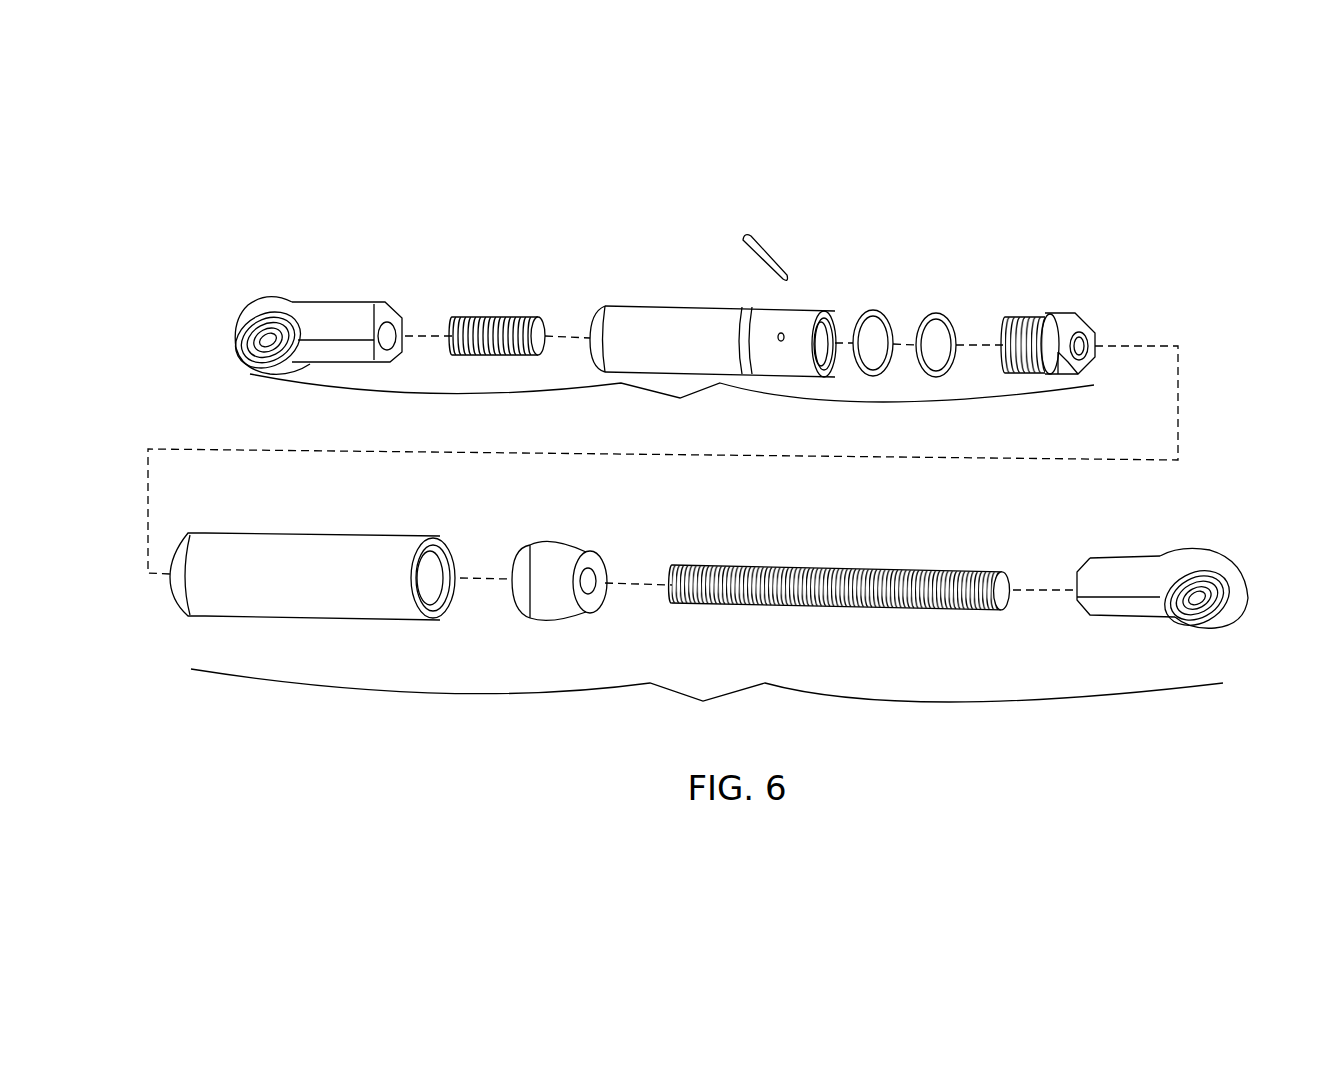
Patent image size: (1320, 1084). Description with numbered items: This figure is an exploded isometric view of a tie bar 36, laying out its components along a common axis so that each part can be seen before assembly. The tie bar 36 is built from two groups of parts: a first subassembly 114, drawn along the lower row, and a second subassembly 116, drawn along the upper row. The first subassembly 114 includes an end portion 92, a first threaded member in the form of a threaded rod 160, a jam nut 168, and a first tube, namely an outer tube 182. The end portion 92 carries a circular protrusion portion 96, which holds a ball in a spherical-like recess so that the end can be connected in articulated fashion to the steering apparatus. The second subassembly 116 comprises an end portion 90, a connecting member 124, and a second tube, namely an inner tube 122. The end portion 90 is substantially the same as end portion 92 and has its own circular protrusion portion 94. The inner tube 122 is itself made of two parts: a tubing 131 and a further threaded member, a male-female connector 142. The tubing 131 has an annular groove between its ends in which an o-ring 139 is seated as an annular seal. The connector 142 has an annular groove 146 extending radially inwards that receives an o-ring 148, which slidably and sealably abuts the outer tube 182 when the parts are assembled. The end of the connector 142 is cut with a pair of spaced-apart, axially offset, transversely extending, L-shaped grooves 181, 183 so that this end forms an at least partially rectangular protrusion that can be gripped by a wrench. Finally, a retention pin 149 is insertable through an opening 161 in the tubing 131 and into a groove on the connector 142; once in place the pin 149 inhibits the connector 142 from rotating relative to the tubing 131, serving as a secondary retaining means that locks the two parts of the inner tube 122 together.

The tie bar 36 is at (1012, 208).
The end portion 90 is at (338, 310).
The end portion 92 is at (1130, 612).
The circular protrusion portion 94 is at (250, 314).
The circular protrusion portion 96 is at (1238, 588).
The first subassembly 114 is at (707, 702).
The second subassembly 116 is at (672, 403).
The inner tube 122 is at (700, 288).
The connecting member 124 is at (474, 315).
The tubing 131 is at (652, 308).
The o-ring 139 is at (880, 310).
The male-female connector 142 is at (1036, 316).
The annular groove 146 is at (1062, 312).
The o-ring 148 is at (936, 314).
The retention pin 149 is at (760, 260).
The threaded rod 160 is at (920, 606).
The opening 161 is at (784, 332).
The jam nut 168 is at (565, 625).
The L-shaped groove 181 is at (1098, 328).
The outer tube 182 is at (312, 616).
The L-shaped groove 183 is at (1075, 375).